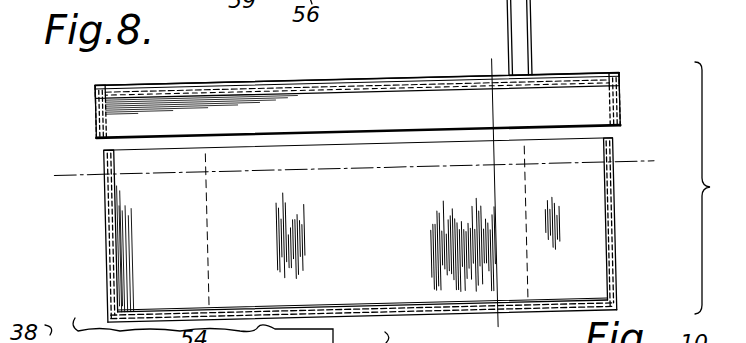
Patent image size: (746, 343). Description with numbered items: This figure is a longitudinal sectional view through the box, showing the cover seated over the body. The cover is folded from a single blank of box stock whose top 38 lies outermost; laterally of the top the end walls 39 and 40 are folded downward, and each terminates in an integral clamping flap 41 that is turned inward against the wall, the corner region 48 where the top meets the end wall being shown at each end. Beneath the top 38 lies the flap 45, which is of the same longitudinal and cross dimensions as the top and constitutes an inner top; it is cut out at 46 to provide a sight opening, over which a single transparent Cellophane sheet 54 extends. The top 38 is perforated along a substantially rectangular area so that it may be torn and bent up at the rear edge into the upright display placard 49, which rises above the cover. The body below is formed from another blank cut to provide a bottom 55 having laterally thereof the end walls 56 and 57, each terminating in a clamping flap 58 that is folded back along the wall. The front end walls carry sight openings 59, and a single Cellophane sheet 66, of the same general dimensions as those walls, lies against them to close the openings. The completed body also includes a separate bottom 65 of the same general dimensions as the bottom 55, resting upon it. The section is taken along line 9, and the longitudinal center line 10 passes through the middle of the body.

The section line 9- 9 is at (500, 68).
The center line 10- 10 is at (93, 158).
The top 38 is at (321, 79).
The end wall 39 is at (97, 99).
The end wall 40 is at (110, 116).
The clamping flap 41 is at (122, 80).
The flap 45 is at (540, 93).
The sight opening 46 is at (447, 92).
The lid corner 48 is at (98, 90).
The display placard 49 is at (516, 19).
The Cellophane sheet 54 is at (392, 81).
The bottom 55 is at (451, 313).
The end wall 56 is at (105, 188).
The end wall 57 is at (117, 190).
The clamping flap 58 is at (146, 301).
The sight opening 59 is at (115, 243).
The separate bottom 65 is at (372, 305).
The Cellophane sheet 66 is at (122, 223).